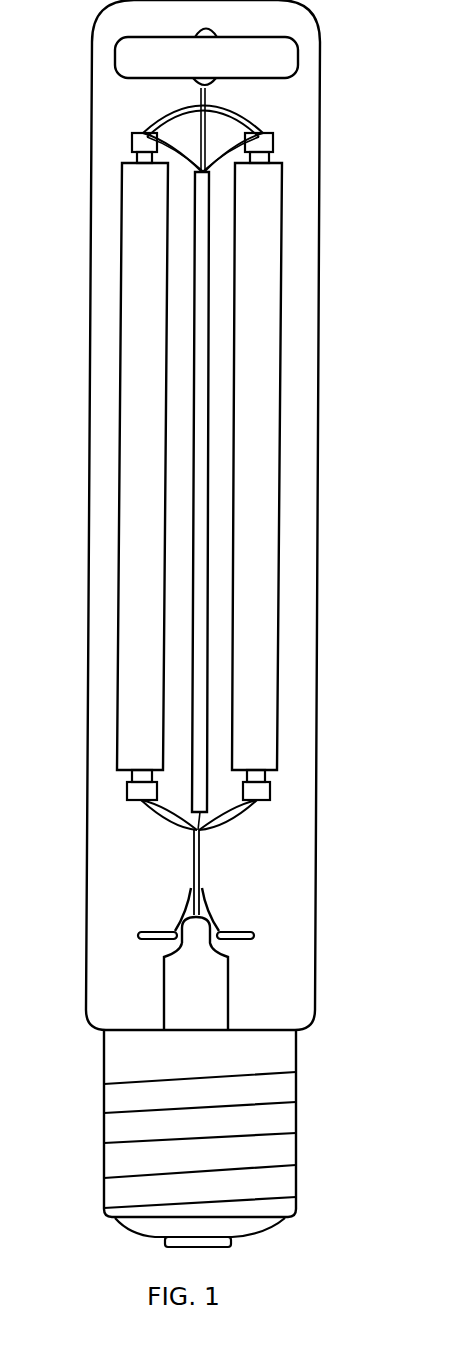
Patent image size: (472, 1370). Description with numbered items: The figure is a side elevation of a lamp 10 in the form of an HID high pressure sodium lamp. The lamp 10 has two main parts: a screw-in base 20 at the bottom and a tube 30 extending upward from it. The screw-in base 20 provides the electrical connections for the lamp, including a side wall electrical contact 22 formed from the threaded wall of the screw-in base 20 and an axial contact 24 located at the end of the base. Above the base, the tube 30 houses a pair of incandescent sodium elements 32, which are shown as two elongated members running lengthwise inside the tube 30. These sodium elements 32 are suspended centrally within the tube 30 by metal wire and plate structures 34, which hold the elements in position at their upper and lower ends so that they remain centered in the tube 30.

The lamp 10 is at (241, 634).
The screw-in base 20 is at (245, 1149).
The side wall electrical contact 22 is at (280, 1121).
The axial contact 24 is at (232, 1243).
The tube 30 is at (300, 870).
The incandescent sodium elements 32 is at (147, 650).
The metal wire and plate structures 34 is at (285, 60).